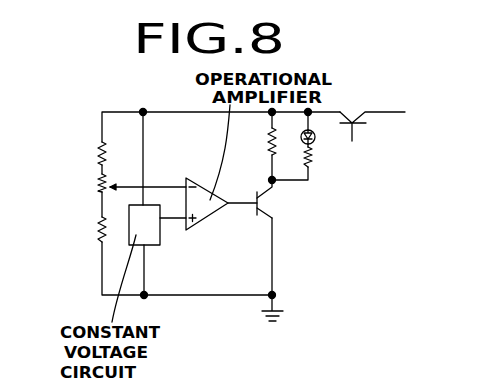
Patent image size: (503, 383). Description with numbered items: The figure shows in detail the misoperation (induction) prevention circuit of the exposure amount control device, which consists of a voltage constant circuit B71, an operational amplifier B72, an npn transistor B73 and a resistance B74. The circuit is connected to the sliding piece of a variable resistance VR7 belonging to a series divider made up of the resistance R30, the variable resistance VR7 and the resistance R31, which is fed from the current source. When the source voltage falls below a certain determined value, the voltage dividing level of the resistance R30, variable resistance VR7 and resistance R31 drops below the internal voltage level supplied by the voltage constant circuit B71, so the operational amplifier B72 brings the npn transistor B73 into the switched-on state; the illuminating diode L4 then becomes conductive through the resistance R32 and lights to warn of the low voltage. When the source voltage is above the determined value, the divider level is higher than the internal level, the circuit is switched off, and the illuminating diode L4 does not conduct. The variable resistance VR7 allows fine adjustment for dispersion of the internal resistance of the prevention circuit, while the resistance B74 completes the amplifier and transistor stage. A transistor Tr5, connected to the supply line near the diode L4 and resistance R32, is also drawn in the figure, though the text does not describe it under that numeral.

The resistance R30 is at (88, 152).
The variable resistance VR7 is at (87, 189).
The resistance R31 is at (89, 233).
The voltage constant circuit B71 is at (152, 245).
The operational amplifier B72 is at (207, 196).
The npn transistor B73 is at (257, 216).
The resistance B74 is at (259, 143).
The illuminating diode L4 is at (315, 141).
The resistance R32 is at (311, 168).
The transistor Tr5 is at (355, 132).